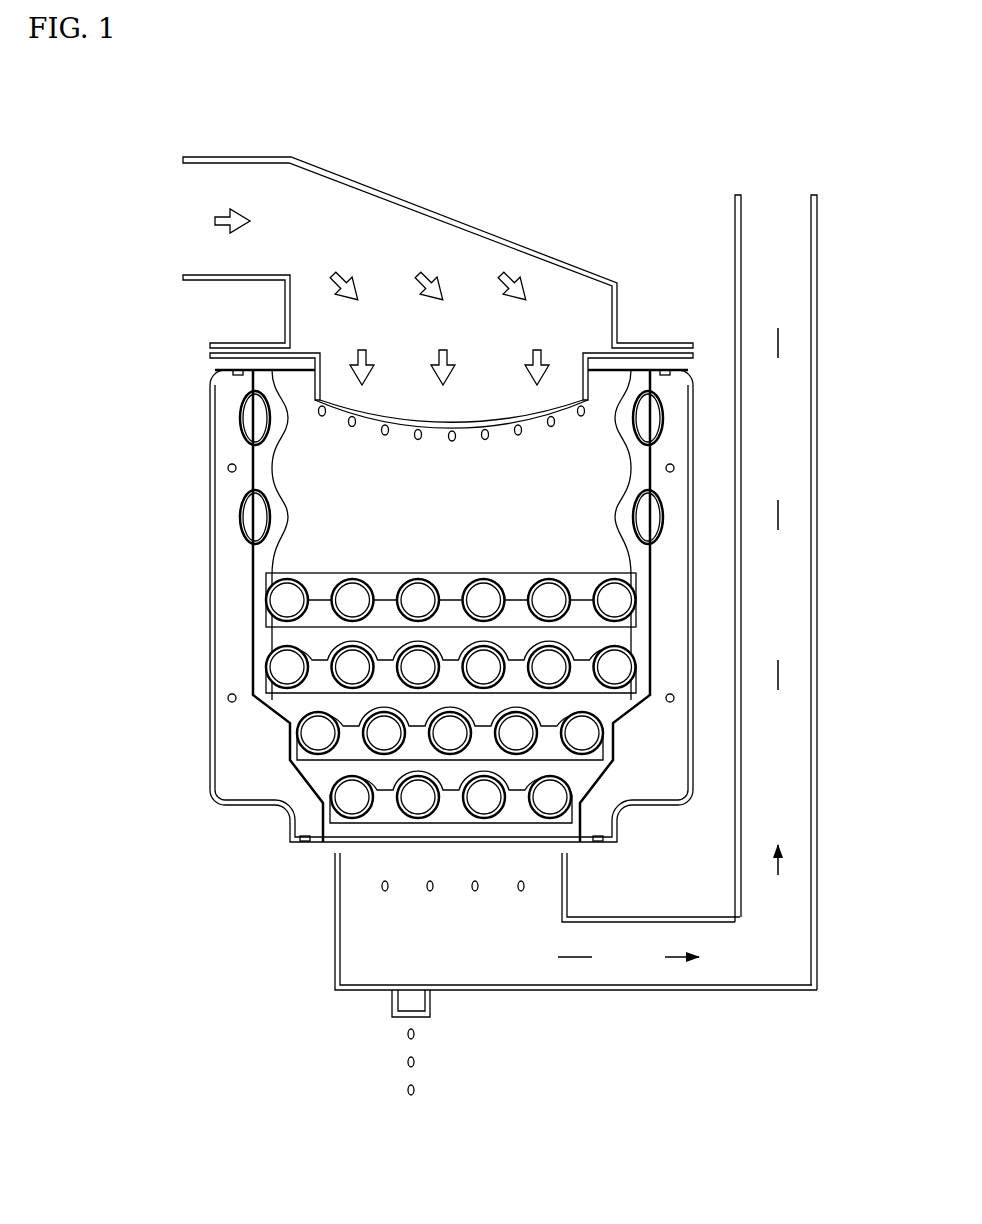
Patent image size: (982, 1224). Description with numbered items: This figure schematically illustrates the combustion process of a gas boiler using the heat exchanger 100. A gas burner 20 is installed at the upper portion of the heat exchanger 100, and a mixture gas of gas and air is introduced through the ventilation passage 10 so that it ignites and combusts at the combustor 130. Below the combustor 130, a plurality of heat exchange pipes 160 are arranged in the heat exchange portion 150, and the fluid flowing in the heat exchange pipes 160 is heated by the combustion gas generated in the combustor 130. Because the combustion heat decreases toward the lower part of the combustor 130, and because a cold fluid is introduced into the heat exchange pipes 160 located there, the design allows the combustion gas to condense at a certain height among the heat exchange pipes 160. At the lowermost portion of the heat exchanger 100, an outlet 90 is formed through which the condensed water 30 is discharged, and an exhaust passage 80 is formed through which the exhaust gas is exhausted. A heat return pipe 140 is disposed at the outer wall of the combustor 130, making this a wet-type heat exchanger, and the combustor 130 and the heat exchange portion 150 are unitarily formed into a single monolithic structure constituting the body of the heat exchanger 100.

The ventilation passage 10 is at (443, 212).
The gas burner 20 is at (323, 411).
The condensed water 30 is at (383, 887).
The exhaust passage 80 is at (817, 852).
The outlet 90 is at (392, 1010).
The heat exchanger 100 is at (170, 645).
The combustor 130 is at (350, 484).
The heat return pipe 140 is at (240, 524).
The heat exchange portion 150 is at (312, 689).
The heat exchange pipe 160 is at (367, 740).